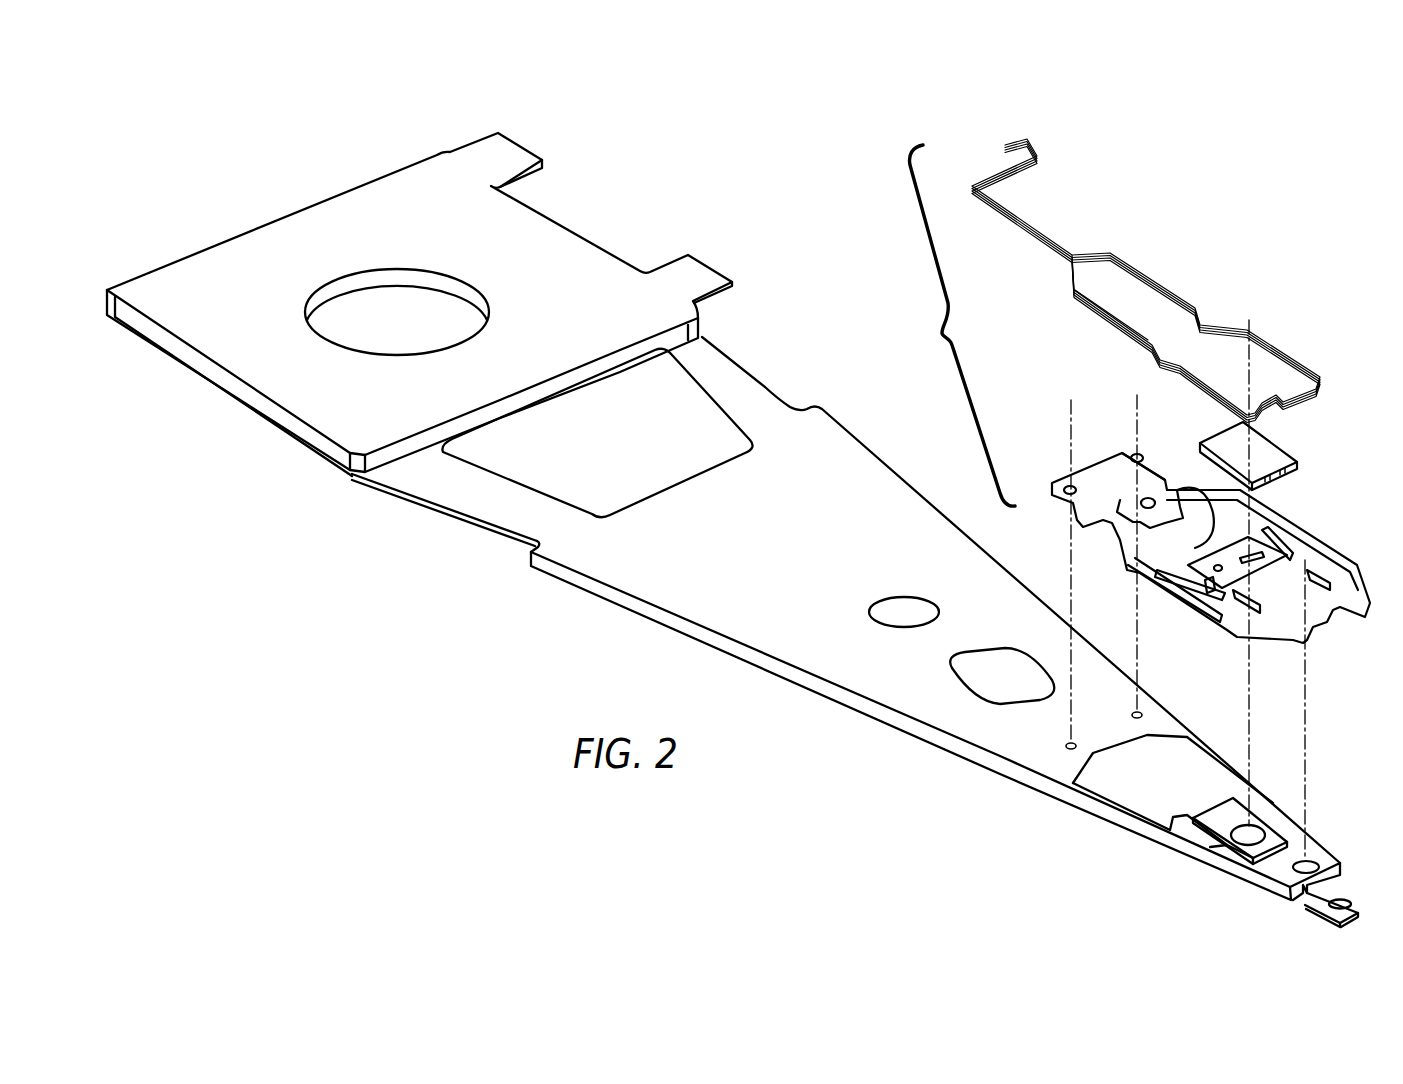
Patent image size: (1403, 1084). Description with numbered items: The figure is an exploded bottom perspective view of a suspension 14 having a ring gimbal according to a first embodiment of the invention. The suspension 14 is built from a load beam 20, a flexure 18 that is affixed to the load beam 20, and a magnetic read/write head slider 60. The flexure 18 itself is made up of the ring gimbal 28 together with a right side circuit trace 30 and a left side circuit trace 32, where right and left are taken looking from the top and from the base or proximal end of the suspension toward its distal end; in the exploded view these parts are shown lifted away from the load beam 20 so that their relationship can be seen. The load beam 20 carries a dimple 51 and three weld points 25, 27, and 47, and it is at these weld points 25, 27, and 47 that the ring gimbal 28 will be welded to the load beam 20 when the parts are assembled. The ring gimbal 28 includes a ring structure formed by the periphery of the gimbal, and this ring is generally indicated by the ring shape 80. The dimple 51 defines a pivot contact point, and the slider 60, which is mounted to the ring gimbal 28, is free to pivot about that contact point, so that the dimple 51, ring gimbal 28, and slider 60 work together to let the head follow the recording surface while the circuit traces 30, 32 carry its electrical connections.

The suspension 14 is at (298, 454).
The flexure 18 is at (961, 325).
The load beam 20 is at (678, 566).
The weld point 25 is at (1140, 713).
The weld point 27 is at (1066, 746).
The ring gimbal 28 is at (1300, 525).
The right side circuit trace 30 is at (1190, 294).
The left side circuit trace 32 is at (1128, 342).
The weld point 47 is at (1309, 864).
The dimple 51 is at (1255, 833).
The magnetic read/write head slider 60 is at (1275, 451).
The ring shape 80 is at (1188, 548).